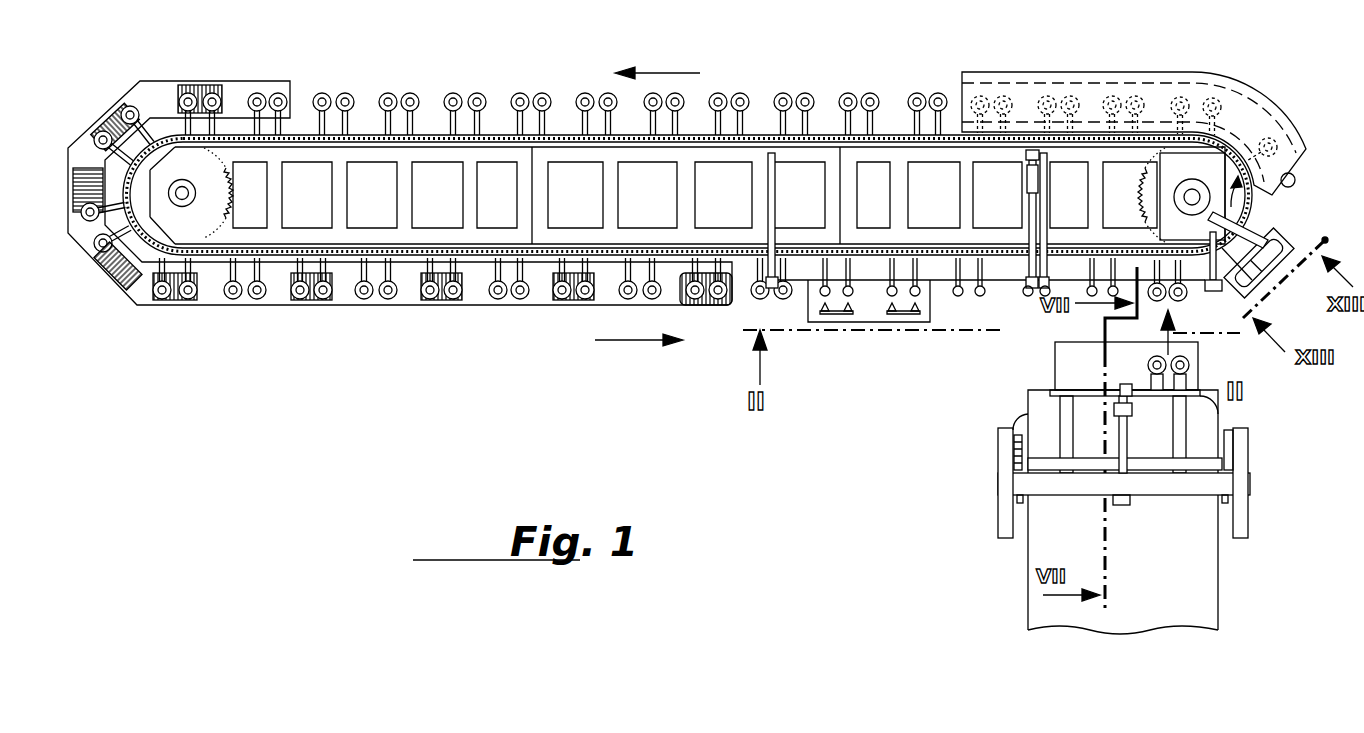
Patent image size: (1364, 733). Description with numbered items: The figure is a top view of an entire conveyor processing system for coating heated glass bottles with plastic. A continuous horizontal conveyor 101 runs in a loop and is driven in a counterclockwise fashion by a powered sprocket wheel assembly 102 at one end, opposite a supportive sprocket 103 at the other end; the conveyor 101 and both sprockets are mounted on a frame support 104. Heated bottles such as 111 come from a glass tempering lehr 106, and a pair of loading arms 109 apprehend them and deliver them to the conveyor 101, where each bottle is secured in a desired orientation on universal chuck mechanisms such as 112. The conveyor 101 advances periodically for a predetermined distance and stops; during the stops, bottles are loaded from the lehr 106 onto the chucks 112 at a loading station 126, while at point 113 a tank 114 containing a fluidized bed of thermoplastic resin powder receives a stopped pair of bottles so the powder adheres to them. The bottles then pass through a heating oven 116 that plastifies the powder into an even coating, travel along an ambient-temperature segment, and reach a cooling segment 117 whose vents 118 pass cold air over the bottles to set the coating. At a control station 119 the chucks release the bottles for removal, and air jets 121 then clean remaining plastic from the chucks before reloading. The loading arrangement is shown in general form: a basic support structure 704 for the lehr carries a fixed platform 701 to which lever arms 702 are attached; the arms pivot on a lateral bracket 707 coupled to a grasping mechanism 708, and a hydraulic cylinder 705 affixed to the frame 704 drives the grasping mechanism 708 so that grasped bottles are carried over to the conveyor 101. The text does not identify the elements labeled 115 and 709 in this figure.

The continuous horizontal conveyor 101 is at (425, 145).
The powered sprocket wheel assembly 102 is at (1135, 190).
The supportive sprocket 103 is at (236, 188).
The frame support 104 is at (340, 170).
The glass tempering lehr 106 is at (1202, 593).
The loading arms 109 is at (1150, 376).
The bottles 111 is at (1178, 356).
The universal chuck mechanisms 112 is at (1185, 283).
The point of the conveyor 113 is at (1240, 233).
The tank 114 is at (1290, 252).
The slide block 115 is at (1268, 263).
The heating oven 116 is at (1282, 100).
The cooling segment 117 is at (237, 93).
The vents 118 is at (118, 275).
The control station 119 is at (771, 290).
The air jets 121 is at (905, 312).
The loading station 126 is at (1032, 293).
The fixed platform 701 is at (1108, 458).
The lever arms 702 is at (1018, 430).
The basic support structure 704 is at (1003, 453).
The hydraulic cylinder 705 is at (1127, 440).
The lateral bracket 707 is at (1063, 410).
The grasping mechanism 708 is at (1218, 407).
The cap nut 709 is at (1130, 403).